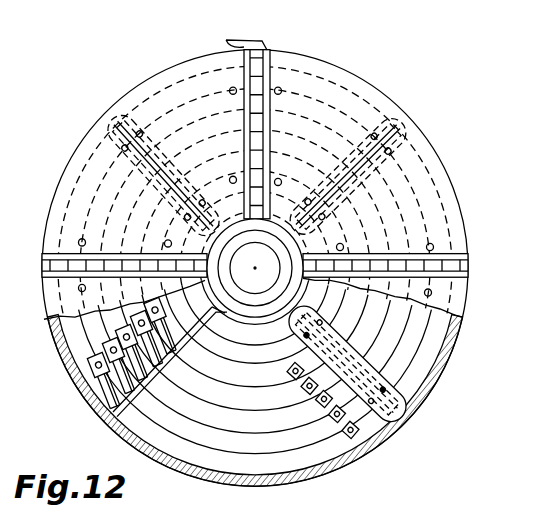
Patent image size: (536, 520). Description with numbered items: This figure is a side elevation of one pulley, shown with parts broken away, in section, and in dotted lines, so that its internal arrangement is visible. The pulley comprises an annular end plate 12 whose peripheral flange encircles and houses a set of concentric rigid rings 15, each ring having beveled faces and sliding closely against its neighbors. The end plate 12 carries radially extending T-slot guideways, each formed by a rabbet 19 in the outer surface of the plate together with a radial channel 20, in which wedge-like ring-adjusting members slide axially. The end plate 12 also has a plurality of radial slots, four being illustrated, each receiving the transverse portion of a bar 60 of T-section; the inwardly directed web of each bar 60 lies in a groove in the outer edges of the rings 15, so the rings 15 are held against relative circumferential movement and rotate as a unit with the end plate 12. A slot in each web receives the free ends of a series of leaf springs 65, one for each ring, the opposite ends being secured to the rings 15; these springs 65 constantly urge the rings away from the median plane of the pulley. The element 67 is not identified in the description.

The annular end plate 12 is at (153, 95).
The concentric rigid rings 15 is at (217, 420).
The rabbet 19 is at (228, 41).
The radial channel 20 is at (258, 96).
The bar of T-section 60 is at (408, 157).
The leaf spring 65 is at (105, 380).
The cover edge 67 is at (204, 336).